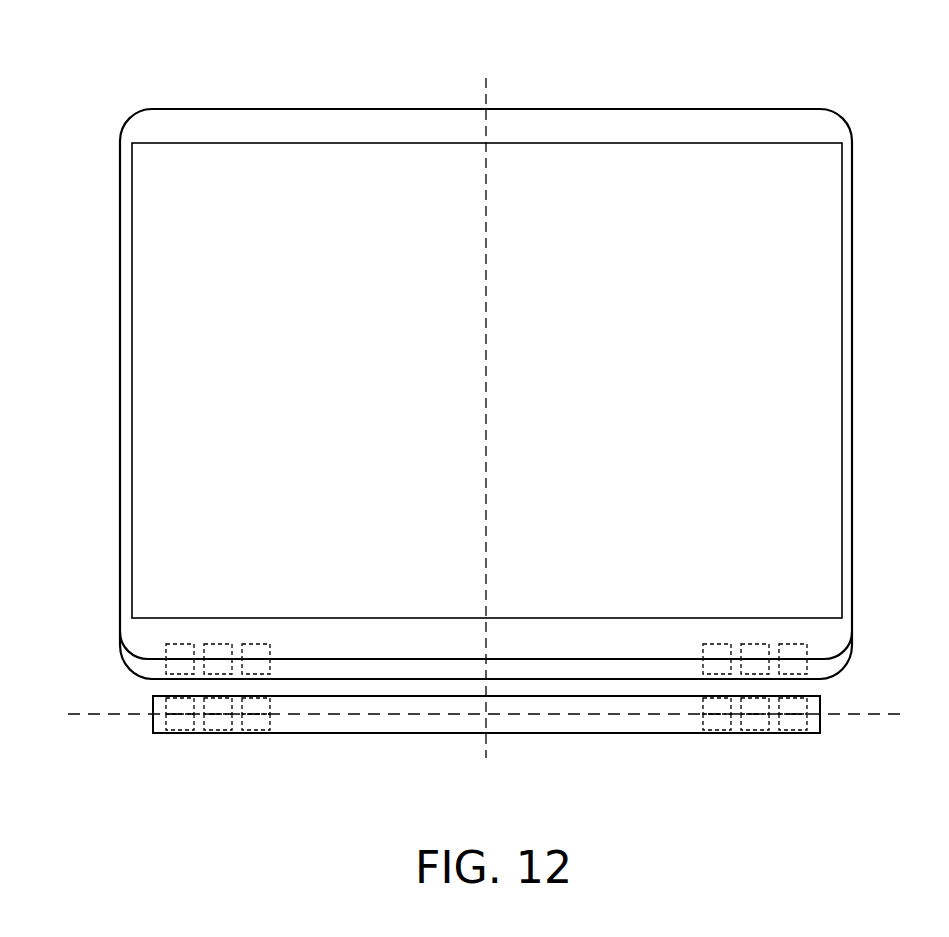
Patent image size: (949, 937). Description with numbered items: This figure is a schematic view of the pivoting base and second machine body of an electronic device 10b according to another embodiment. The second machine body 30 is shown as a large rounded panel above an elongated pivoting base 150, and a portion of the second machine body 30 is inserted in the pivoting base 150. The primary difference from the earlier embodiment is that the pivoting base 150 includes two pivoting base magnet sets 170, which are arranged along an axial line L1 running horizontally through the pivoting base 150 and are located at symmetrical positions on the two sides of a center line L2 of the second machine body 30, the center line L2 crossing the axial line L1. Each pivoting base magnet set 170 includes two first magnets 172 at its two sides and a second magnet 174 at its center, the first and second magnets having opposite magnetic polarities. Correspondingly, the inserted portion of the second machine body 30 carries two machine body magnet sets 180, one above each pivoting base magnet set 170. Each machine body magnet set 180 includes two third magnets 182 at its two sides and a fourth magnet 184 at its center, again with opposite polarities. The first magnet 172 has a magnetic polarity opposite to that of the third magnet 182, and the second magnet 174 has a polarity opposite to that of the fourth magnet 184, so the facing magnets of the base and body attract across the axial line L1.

The electronic device 10b is at (938, 787).
The second machine body 30 is at (586, 103).
The pivoting base 150 is at (544, 725).
The pivoting base magnet set 170 is at (280, 817).
The first magnet 172 is at (796, 782).
The second magnet 174 is at (755, 782).
The machine body magnet set 180 is at (280, 547).
The third magnet 182 is at (803, 644).
The fourth magnet 184 is at (750, 644).
The axial line L1 is at (472, 714).
The center line L2 is at (484, 398).